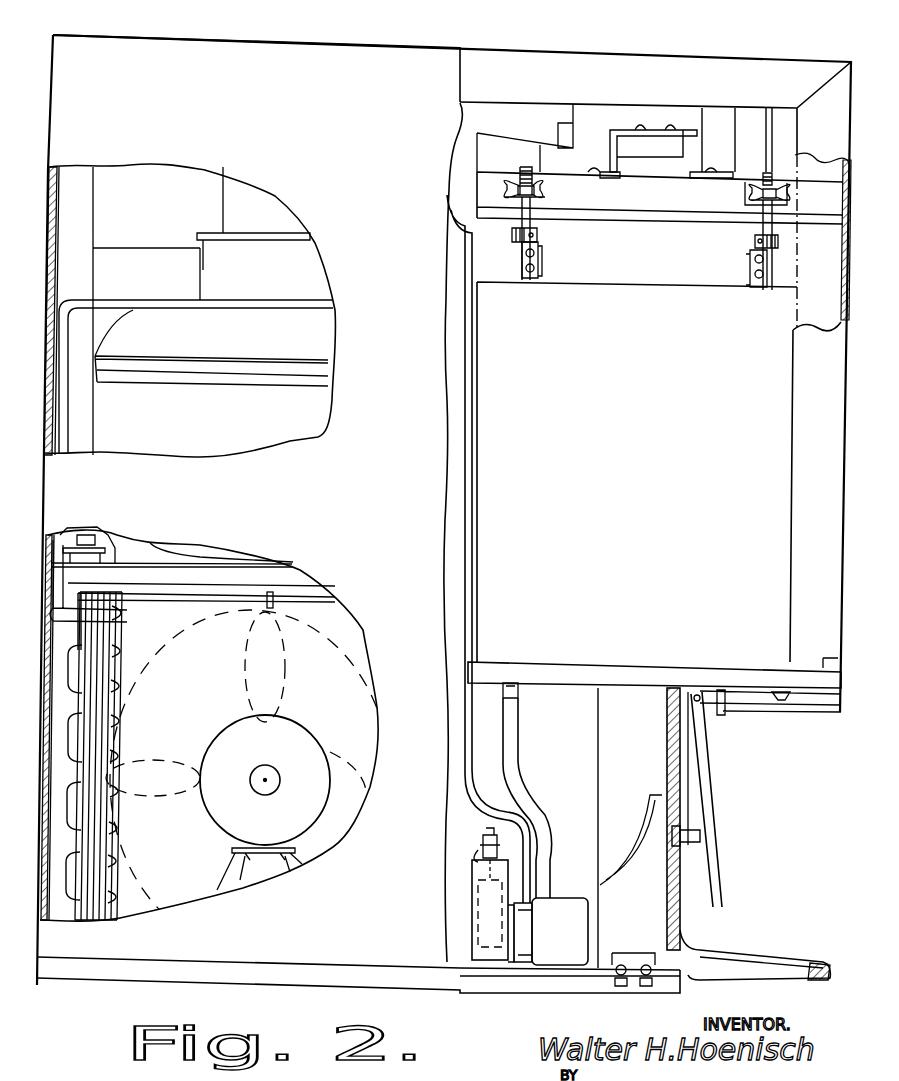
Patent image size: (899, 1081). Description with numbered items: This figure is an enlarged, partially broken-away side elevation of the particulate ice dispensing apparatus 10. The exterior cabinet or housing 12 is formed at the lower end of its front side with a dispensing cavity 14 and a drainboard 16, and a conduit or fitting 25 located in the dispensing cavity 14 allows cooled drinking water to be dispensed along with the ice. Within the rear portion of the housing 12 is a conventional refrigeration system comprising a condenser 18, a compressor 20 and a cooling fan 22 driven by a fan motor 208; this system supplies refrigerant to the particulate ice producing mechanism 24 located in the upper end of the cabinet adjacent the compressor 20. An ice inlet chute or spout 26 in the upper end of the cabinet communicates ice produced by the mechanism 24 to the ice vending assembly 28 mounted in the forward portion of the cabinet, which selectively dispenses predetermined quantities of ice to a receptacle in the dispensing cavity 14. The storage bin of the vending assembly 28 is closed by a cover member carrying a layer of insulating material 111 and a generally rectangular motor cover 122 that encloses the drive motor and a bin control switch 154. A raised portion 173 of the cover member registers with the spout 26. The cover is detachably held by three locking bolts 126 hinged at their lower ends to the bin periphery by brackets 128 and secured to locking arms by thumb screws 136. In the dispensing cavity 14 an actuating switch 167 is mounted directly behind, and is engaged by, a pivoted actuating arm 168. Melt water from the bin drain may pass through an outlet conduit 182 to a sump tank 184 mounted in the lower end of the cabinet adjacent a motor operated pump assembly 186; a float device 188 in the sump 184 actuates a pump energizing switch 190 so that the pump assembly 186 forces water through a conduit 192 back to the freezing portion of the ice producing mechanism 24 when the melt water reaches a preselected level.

The ice dispensing apparatus 10 is at (633, 36).
The exterior cabinet or housing 12 is at (280, 40).
The dispensing cavity 14 is at (805, 774).
The drainboard 16 is at (745, 950).
The condenser 18 is at (72, 720).
The compressor 20 is at (296, 358).
The cooling fan 22 is at (300, 678).
The particulate ice producing mechanism 24 is at (240, 200).
The conduit or fitting 25 is at (740, 716).
The ice inlet chute or spout 26 is at (465, 140).
The ice vending assembly 28 is at (466, 452).
The layer of insulating material 111 is at (503, 176).
The motor cover 122 is at (702, 142).
The locking bolts 126 is at (540, 214).
The brackets 128 is at (542, 264).
The thumb screws 136 is at (503, 196).
The bin control switch 154 is at (648, 140).
The actuating switch 167 is at (702, 845).
The actuating arm 168 is at (714, 812).
The raised portion of cover member 173 is at (530, 150).
The outlet conduit 182 is at (522, 748).
The sump tank 184 is at (472, 868).
The motor operated pump assembly 186 is at (556, 892).
The float device 188 is at (486, 900).
The pump energizing switch 190 is at (480, 840).
The conduit 192 is at (456, 715).
The fan motor 208 is at (222, 834).